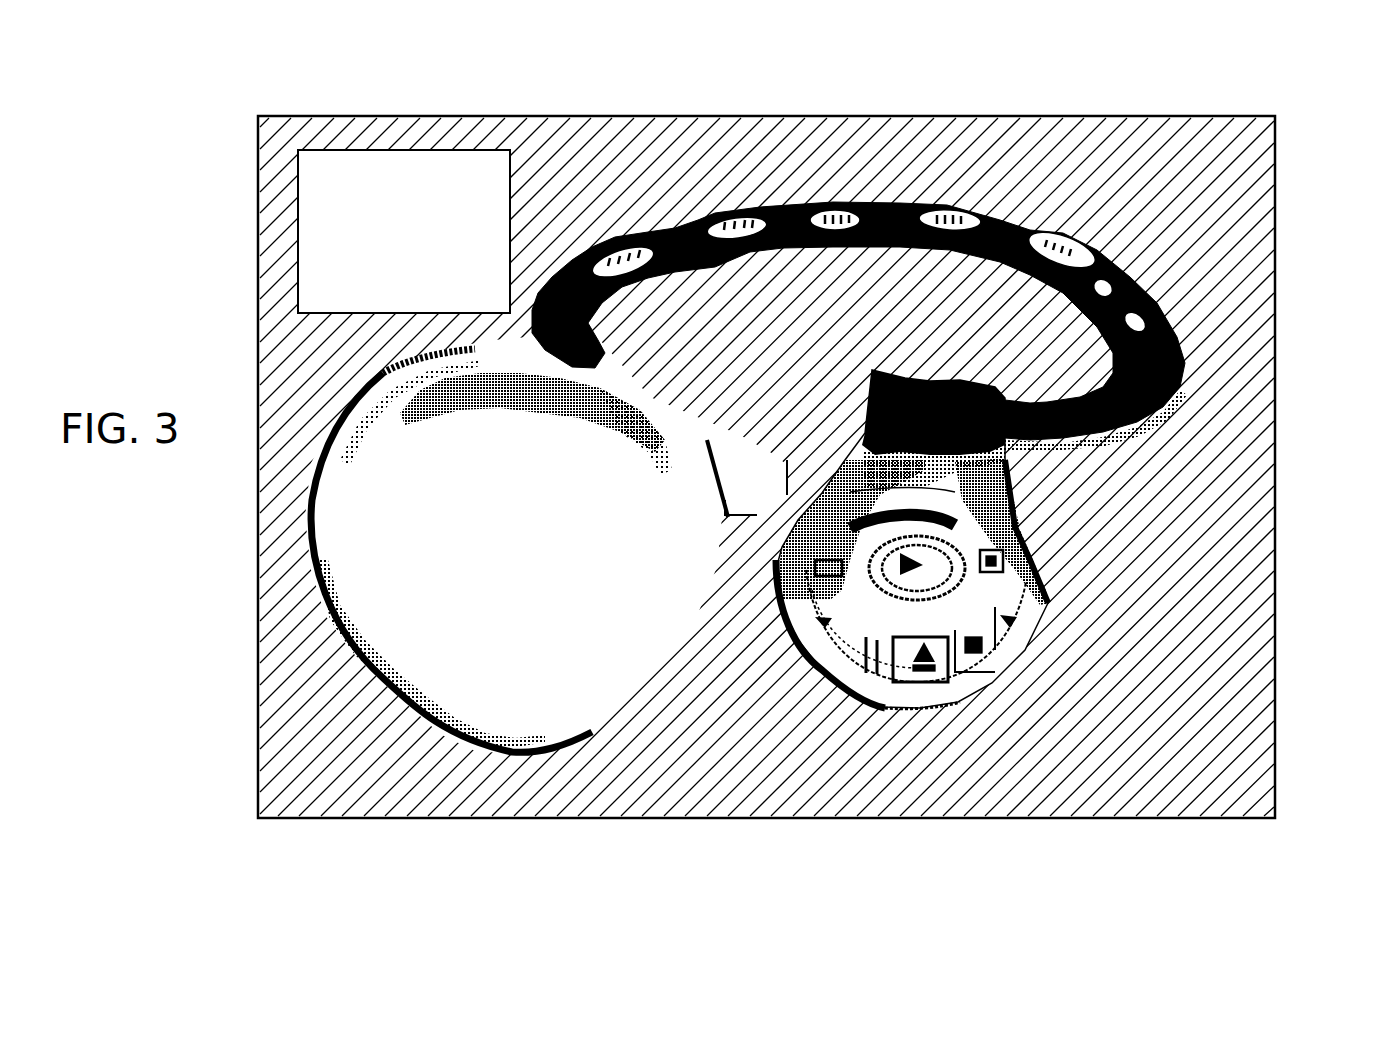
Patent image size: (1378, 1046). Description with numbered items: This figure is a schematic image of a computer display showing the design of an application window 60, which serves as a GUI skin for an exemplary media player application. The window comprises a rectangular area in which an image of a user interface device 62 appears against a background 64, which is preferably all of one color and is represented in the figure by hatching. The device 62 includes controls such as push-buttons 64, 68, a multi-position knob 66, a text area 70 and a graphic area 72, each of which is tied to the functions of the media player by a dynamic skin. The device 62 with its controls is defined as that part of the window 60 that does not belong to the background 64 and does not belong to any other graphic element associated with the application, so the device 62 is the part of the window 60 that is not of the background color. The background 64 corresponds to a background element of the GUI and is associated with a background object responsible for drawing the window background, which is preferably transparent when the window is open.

The application window 60 is at (1075, 117).
The user interface device 62 is at (1185, 370).
The background 64 is at (890, 673).
The multi-position knob 66 is at (1005, 458).
The push-buttons 68 is at (907, 205).
The text area 70 is at (335, 577).
The graphic area 72 is at (297, 232).